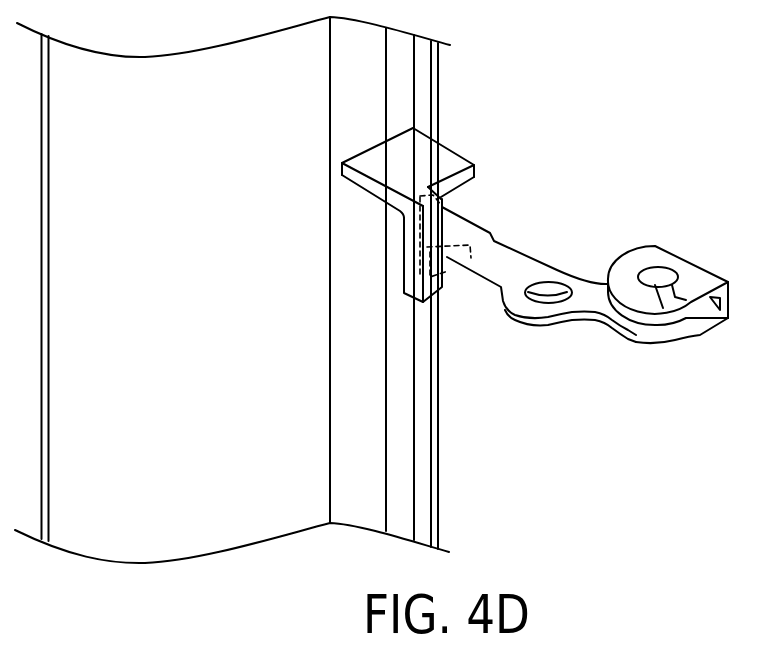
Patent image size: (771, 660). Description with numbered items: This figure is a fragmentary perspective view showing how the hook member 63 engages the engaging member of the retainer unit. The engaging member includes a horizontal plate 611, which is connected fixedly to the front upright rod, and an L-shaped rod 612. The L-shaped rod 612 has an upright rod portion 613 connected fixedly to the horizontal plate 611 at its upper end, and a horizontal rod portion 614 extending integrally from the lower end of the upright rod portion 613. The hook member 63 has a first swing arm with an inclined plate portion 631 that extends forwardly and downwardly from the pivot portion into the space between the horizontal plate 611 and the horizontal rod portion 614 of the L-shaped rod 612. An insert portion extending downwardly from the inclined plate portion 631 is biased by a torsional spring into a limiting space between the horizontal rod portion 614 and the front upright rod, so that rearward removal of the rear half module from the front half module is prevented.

The hook member 63 is at (595, 225).
The horizontal plate 611 is at (457, 150).
The L-shaped rod 612 is at (400, 273).
The upright rod portion 613 is at (413, 232).
The horizontal rod portion 614 is at (457, 278).
The inclined plate portion 631 is at (470, 222).